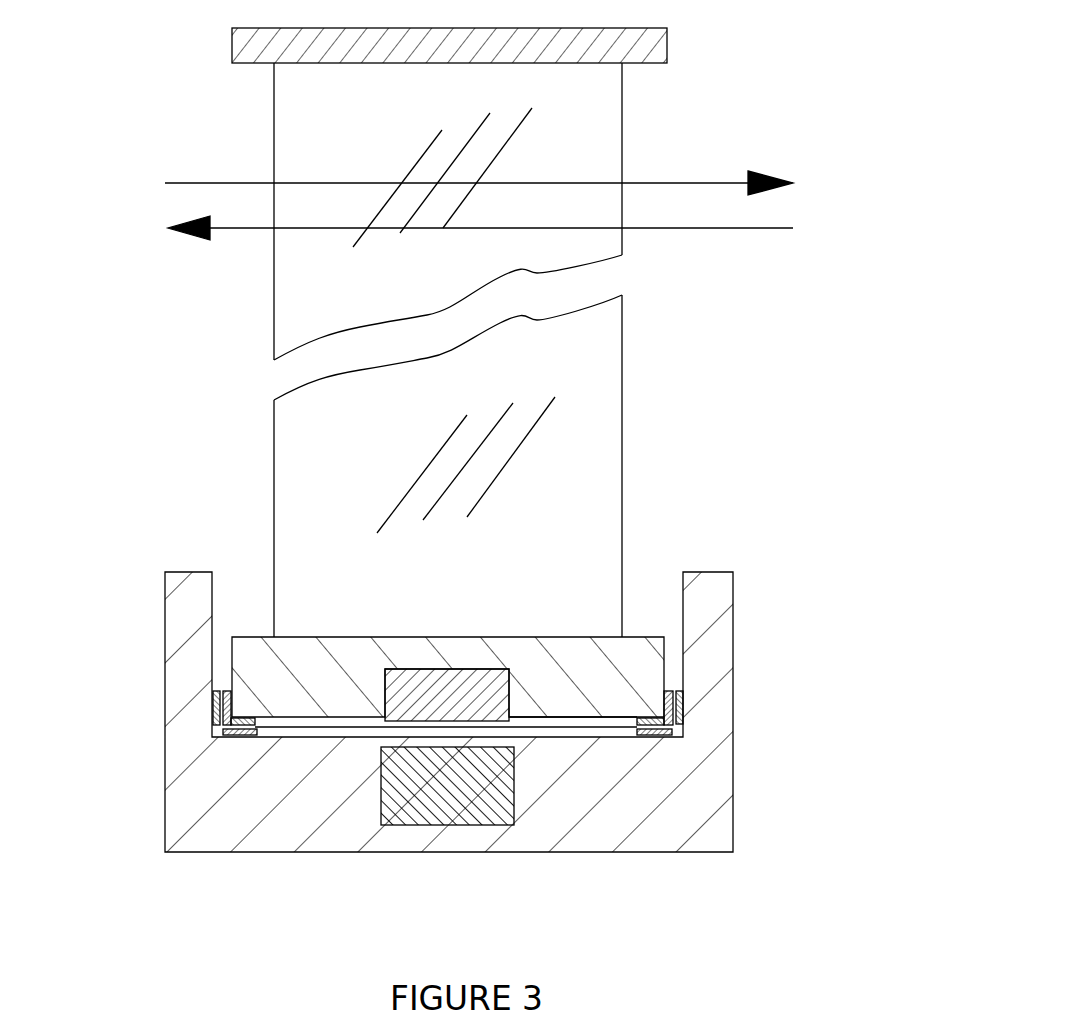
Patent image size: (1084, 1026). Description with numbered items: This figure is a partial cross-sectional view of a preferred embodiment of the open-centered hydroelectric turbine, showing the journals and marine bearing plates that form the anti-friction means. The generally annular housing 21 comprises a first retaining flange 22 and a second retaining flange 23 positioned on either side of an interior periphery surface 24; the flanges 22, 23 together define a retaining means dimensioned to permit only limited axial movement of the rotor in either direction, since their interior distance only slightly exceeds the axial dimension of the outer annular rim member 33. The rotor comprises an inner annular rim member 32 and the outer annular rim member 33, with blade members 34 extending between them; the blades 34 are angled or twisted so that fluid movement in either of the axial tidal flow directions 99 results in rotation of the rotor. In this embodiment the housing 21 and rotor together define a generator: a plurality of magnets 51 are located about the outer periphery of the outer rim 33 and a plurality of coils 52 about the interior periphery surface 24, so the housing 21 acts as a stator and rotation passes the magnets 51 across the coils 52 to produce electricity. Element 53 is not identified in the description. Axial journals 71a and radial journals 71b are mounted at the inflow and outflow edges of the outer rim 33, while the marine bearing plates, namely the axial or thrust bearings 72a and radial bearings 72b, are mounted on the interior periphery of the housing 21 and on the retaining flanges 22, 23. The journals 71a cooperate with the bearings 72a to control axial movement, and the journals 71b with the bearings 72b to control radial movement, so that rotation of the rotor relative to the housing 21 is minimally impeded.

The housing 21 is at (643, 852).
The first retaining flange 22 is at (165, 639).
The second retaining flange 23 is at (733, 627).
The interior periphery surface 24 is at (303, 738).
The inner annular rim member 32 is at (667, 38).
The outer annular rim member 33 is at (632, 634).
The blade members 34 is at (595, 352).
The magnets 51 is at (447, 695).
The coils 52 is at (503, 827).
The membrane 53 is at (382, 730).
The axial journals 71a is at (222, 691).
The radial journals 71b is at (248, 717).
The axial bearings 72a is at (213, 712).
The radial bearings 72b is at (223, 738).
The axial tidal flow directions 99 is at (685, 212).